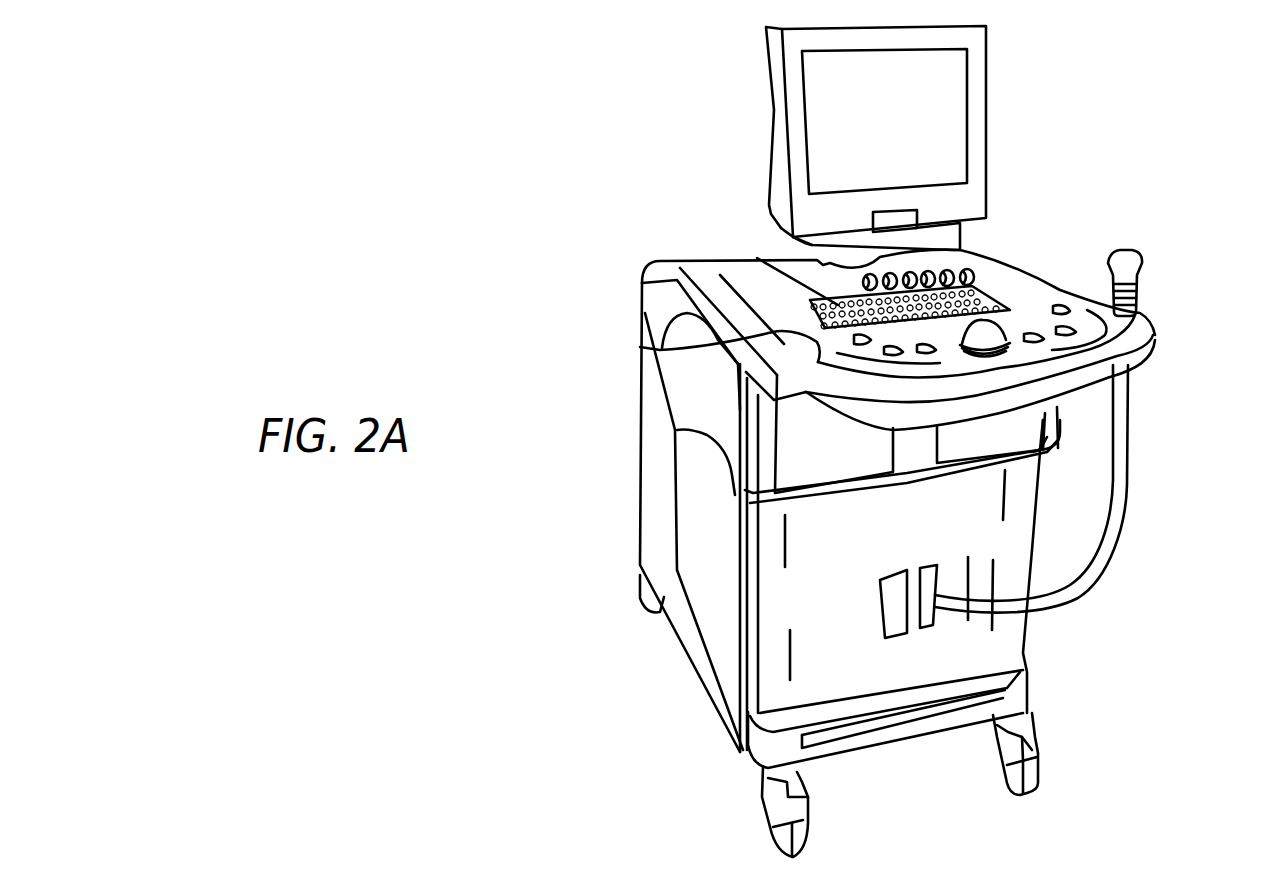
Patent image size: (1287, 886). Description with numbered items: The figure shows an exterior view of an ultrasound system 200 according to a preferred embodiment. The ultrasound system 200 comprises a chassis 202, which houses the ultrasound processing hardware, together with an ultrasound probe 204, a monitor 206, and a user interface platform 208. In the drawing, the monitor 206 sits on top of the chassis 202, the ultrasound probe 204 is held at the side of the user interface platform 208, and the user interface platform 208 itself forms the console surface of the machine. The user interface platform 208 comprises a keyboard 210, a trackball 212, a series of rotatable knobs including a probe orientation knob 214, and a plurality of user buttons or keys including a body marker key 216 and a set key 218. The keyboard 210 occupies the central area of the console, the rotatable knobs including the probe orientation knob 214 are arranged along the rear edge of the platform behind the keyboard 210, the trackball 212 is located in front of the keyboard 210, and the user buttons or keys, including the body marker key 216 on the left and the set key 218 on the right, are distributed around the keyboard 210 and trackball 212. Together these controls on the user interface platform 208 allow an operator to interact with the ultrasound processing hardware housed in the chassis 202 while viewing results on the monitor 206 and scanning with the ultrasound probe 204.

The ultrasound system 200 is at (506, 102).
The chassis 202 is at (688, 621).
The ultrasound probe 204 is at (1142, 276).
The monitor 206 is at (758, 174).
The user interface platform 208 is at (1150, 336).
The keyboard 210 is at (800, 307).
The trackball 212 is at (987, 310).
The probe orientation knob 214 is at (966, 272).
The body marker key 216 is at (642, 348).
The set key 218 is at (1062, 306).